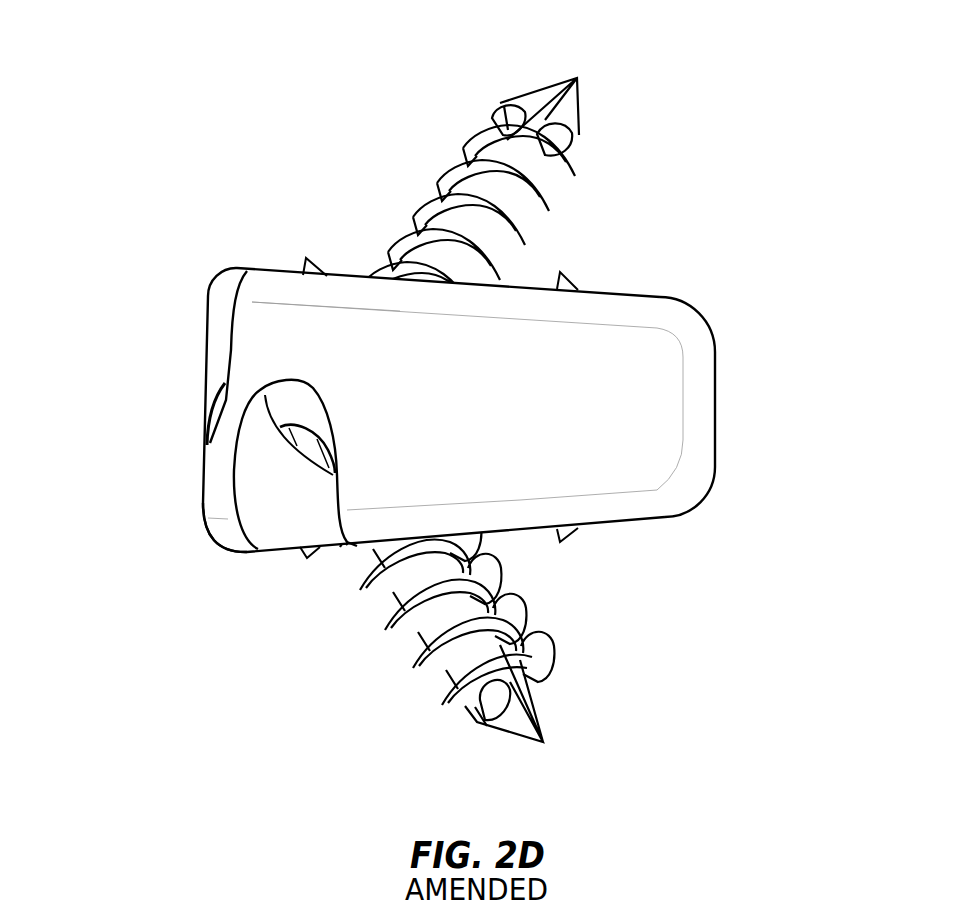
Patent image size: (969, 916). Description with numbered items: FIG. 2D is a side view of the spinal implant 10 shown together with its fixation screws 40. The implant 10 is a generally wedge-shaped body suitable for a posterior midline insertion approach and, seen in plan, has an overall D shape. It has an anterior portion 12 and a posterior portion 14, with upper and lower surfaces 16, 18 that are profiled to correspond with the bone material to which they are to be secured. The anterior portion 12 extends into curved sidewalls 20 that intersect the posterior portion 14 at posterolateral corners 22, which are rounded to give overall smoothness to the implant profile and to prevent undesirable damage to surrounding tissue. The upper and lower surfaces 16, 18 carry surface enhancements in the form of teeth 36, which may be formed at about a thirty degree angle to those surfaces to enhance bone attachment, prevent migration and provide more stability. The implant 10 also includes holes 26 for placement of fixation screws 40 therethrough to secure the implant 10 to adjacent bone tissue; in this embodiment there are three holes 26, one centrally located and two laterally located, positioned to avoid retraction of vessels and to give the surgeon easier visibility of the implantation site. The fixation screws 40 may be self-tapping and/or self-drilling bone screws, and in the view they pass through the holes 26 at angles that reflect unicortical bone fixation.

The spinal implant 10 is at (290, 110).
The anterior portion 12 is at (218, 475).
The posterior portion 14 is at (718, 400).
The upper surface 16 is at (282, 284).
The lower surface 18 is at (610, 527).
The curved sidewalls 20 is at (623, 467).
The posterolateral corners 22 is at (215, 527).
The holes 26 is at (220, 340).
The teeth 36 is at (573, 283).
The fixation screw 40 is at (463, 108).